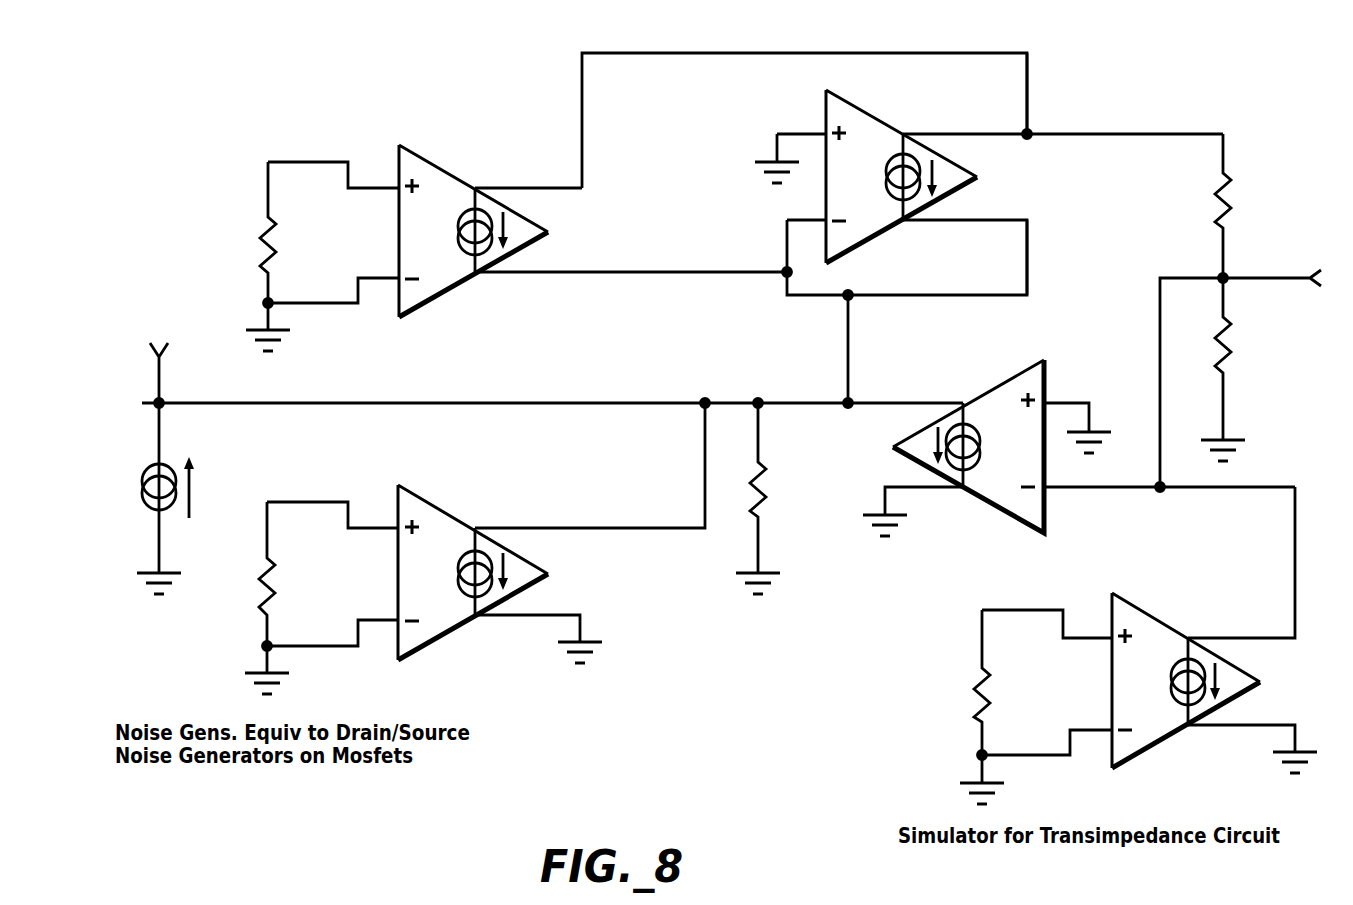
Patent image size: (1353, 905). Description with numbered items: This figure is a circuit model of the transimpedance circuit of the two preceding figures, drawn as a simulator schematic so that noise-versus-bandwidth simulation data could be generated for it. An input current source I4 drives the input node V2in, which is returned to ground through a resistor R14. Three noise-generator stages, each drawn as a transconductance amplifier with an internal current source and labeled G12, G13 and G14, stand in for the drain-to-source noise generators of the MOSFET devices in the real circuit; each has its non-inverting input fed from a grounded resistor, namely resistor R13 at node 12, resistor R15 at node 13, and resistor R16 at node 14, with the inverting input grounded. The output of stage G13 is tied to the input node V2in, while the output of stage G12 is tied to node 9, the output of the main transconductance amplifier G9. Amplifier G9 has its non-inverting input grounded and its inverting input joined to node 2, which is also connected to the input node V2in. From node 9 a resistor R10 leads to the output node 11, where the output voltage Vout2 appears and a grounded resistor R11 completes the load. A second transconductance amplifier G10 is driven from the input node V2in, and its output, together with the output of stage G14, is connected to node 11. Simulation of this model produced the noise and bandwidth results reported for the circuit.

The node 2 (G9 inverting input / G10 feedback node) 2 is at (1036, 256).
The node 9 (G9 output) 9 is at (1034, 108).
The node 11 (Vout2 output node) 11 is at (1206, 381).
The node 12 (G12 non-inverting input via R13) 12 is at (333, 175).
The node 13 (G13 non-inverting input via R15) 13 is at (332, 515).
The node 14 (G14 non-inverting input via R16) 14 is at (1047, 624).
The transconductance amplifier G9 506u G9 is at (989, 232).
The transconductance amplifier G10 277u G10 is at (1079, 420).
The noise generator transconductance G12 1.316e-3 G12 is at (593, 208).
The noise generator transconductance G13 1.316e-3 G13 is at (551, 533).
The noise generator transconductance G14 1.316e-3 G14 is at (1214, 630).
The resistor R10 10.2k R10 is at (1254, 206).
The resistor R11 27.8k R11 is at (1247, 369).
The resistor R13 200 R13 is at (322, 256).
The resistor R14 1meg R14 is at (785, 498).
The resistor R15 148 R15 is at (321, 598).
The resistor R16 150 R16 is at (1036, 707).
The input current source I4 is at (176, 498).
The input voltage node V2in is at (181, 373).
The output voltage Vout2 is at (1272, 266).